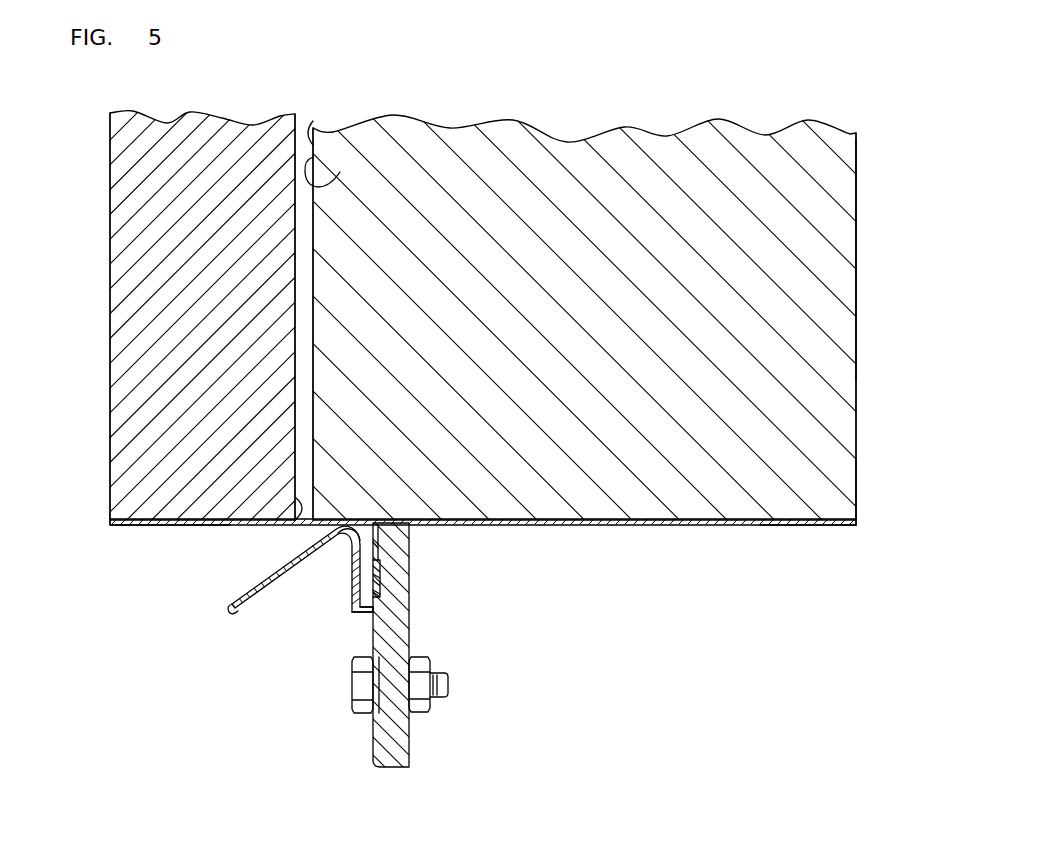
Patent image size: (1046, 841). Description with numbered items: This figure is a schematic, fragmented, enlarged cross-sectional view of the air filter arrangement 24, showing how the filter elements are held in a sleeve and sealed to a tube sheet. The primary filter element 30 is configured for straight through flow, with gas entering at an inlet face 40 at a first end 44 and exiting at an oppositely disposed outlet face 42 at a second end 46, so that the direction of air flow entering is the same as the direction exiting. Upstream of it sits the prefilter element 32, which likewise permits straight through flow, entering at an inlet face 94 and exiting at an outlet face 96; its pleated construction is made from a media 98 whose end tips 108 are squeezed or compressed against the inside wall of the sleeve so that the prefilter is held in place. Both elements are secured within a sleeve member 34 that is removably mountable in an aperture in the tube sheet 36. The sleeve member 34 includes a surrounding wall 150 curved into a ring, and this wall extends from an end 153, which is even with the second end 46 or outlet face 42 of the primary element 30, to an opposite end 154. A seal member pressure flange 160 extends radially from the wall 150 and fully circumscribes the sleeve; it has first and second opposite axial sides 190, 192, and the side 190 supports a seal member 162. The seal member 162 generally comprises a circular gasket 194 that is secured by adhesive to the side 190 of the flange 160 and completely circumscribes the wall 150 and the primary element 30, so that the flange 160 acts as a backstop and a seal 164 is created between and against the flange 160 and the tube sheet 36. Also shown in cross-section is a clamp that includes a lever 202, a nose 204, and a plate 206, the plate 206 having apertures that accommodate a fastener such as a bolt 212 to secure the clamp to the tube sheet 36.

The panel assembly 24 is at (642, 108).
The prefilter element 32 is at (202, 115).
The media 98 is at (282, 125).
The inlet face 40 is at (308, 127).
The first end 44 is at (340, 172).
The second end 46 is at (856, 372).
The outlet face 42 is at (856, 438).
The primary filter element 30 is at (856, 494).
The end 153 is at (856, 523).
The surrounding wall 150 is at (816, 526).
The sleeve member 34 is at (740, 526).
The inlet face 94 is at (110, 483).
The opposite end 154 is at (110, 523).
The end tips 108 is at (162, 518).
The outlet face 96 is at (295, 522).
The second axial side 192 is at (361, 530).
The first axial side 190 is at (379, 533).
The seal member pressure flange 160 is at (374, 545).
The circular gasket 194 is at (377, 567).
The tube sheet 36 is at (409, 574).
The seal 164 is at (380, 578).
The seal member 162 is at (378, 593).
The nose 204 is at (356, 552).
The plate 206 is at (373, 633).
The lever 202 is at (257, 609).
The bolt 212 is at (353, 712).